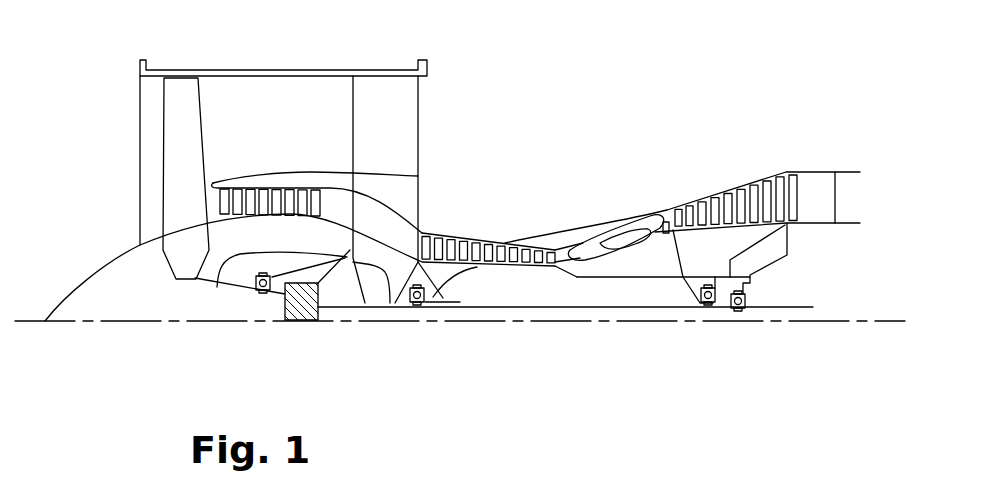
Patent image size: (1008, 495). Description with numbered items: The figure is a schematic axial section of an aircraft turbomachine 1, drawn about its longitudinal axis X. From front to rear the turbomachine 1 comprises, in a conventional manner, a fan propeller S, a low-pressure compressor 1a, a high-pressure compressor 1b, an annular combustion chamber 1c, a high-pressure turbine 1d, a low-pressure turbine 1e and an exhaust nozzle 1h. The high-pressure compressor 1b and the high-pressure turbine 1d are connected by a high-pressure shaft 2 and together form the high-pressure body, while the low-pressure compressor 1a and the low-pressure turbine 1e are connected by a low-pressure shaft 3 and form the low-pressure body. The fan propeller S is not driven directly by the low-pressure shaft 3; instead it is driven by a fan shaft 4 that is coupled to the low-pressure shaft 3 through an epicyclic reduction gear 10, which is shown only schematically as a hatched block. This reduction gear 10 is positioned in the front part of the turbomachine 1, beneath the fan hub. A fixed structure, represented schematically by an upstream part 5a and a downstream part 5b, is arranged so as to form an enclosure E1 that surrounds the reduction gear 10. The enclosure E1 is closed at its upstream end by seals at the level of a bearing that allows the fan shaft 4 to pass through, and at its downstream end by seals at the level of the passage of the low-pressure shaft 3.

The turbomachine 1 is at (537, 143).
The fan propeller S is at (177, 129).
The low-pressure compressor 1a is at (240, 190).
The high-pressure compressor 1b is at (450, 240).
The annular combustion chamber 1c is at (617, 240).
The high-pressure turbine 1d is at (668, 222).
The low-pressure turbine 1e is at (788, 192).
The exhaust nozzle 1h is at (845, 193).
The high-pressure shaft 2 is at (611, 278).
The low-pressure shaft 3 is at (517, 308).
The fan shaft 4 is at (243, 293).
The upstream part of the fixed structure 5a is at (218, 287).
The downstream part of the fixed structure 5b is at (379, 304).
The epicyclic reduction gear 10 is at (297, 300).
The enclosure E1 is at (333, 273).
The longitudinal axis X is at (27, 321).